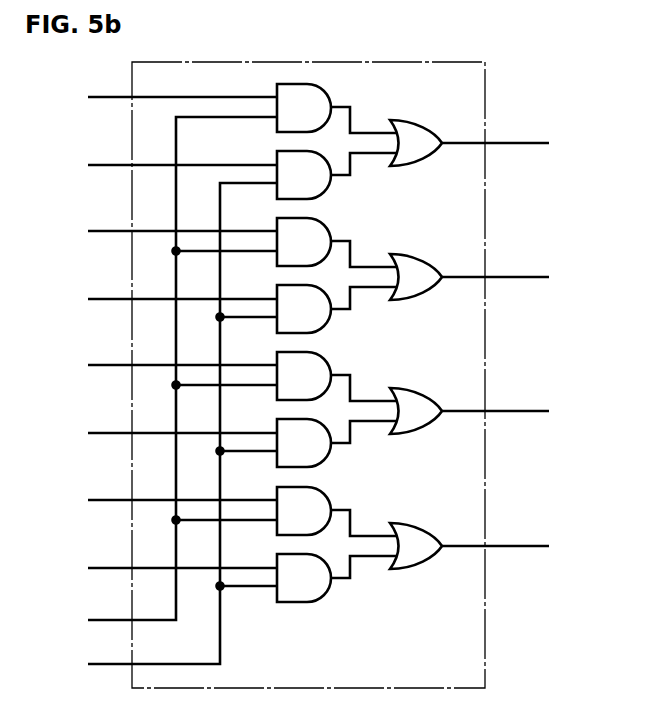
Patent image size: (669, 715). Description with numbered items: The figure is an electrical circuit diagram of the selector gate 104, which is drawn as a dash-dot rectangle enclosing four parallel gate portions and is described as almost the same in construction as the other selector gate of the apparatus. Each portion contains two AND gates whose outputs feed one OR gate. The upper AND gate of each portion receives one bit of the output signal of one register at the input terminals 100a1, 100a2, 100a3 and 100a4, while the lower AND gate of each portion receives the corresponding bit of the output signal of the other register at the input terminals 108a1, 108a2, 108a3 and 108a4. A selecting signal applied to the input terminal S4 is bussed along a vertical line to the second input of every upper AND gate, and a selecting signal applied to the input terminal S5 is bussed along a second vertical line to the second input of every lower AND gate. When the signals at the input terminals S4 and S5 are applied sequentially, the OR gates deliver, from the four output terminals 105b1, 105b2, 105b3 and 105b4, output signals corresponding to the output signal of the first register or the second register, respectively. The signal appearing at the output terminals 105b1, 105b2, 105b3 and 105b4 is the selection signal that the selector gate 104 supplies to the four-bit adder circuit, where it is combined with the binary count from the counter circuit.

The selector gate 104 is at (486, 102).
The input terminal S4 is at (171, 382).
The input terminal S5 is at (171, 437).
The input terminal 100a1 is at (149, 100).
The input terminal 108a1 is at (149, 168).
The output terminal 105b1 is at (530, 147).
The input terminal 100a2 is at (149, 234).
The input terminal 108a2 is at (149, 302).
The output terminal 105b2 is at (530, 281).
The input terminal 100a3 is at (149, 368).
The input terminal 108a3 is at (149, 436).
The output terminal 105b3 is at (530, 415).
The input terminal 100a4 is at (149, 503).
The input terminal 108a4 is at (149, 571).
The output terminal 105b4 is at (530, 550).